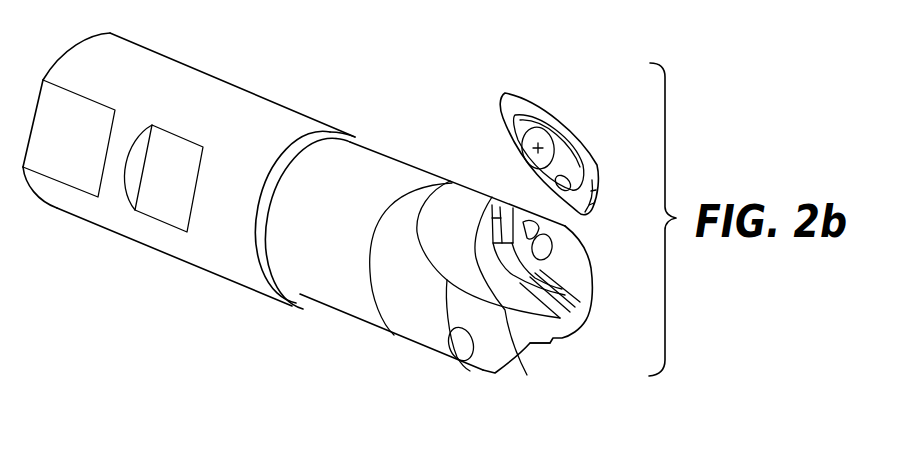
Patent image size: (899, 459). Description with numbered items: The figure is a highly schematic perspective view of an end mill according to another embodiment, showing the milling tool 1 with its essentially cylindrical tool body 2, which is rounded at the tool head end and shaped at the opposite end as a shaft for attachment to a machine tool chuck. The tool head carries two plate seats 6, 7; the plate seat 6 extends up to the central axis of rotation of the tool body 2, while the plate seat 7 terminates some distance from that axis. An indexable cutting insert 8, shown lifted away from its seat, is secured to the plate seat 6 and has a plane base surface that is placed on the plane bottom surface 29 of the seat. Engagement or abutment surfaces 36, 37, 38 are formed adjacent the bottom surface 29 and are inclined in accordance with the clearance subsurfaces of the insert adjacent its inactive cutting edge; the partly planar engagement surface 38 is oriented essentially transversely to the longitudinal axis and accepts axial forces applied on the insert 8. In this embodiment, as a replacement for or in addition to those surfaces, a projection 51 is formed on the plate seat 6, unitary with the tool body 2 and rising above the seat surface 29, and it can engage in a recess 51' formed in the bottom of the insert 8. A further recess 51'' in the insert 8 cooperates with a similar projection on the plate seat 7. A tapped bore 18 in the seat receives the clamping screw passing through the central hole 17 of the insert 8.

The milling tool 1 is at (334, 217).
The tool body 2 is at (382, 182).
The plate seat 6 is at (508, 291).
The plate seat 7 is at (557, 355).
The indexable cutting insert 8 is at (526, 249).
The insert clamping hole 17 is at (537, 132).
The tapped bore 18 is at (553, 247).
The bottom surface 29 is at (555, 273).
The engagement surface 36 is at (560, 310).
The engagement surface 37 is at (508, 298).
The engagement surface 38 is at (465, 180).
The projection 51 is at (524, 230).
The recess 51' is at (519, 151).
The recess 51'' is at (597, 163).